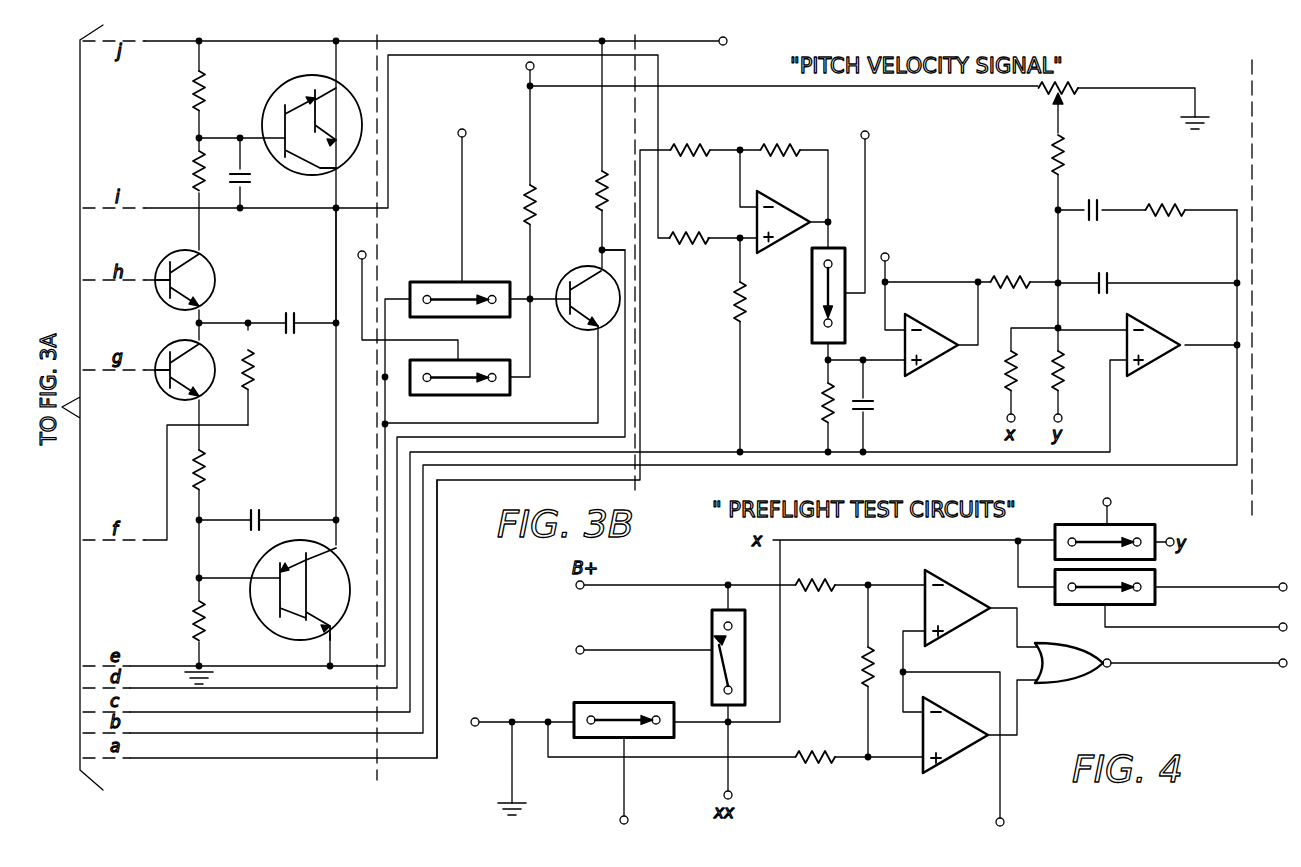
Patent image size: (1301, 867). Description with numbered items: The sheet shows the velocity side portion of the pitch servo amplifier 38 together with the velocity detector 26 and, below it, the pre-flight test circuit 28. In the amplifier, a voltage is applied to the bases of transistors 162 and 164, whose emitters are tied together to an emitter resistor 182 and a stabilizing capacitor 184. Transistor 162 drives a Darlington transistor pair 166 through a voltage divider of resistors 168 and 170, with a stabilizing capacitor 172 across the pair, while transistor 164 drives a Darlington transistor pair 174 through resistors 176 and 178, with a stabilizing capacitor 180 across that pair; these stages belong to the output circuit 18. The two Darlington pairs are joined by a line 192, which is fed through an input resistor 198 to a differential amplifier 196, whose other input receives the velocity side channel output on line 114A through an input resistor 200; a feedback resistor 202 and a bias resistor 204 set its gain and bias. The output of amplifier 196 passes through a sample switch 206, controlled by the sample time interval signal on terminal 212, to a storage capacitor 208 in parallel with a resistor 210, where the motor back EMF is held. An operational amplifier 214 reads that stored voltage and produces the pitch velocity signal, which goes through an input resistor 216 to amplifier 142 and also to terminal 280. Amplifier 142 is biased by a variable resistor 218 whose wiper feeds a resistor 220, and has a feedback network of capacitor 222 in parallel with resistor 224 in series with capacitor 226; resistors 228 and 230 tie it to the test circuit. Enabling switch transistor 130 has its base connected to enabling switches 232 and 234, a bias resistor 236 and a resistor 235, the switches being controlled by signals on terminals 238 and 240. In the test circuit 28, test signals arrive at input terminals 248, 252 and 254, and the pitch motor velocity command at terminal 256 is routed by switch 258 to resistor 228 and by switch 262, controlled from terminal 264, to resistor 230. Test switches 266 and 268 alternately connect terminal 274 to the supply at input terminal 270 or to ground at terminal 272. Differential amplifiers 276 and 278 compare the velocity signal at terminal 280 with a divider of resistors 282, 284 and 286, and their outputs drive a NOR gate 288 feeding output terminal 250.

In FIG. 3B, the resistor 170 is at (196, 90).
In FIG. 3B, the resistor 168 is at (196, 172).
In FIG. 3B, the stabilizing capacitor 172 is at (252, 180).
In FIG. 3B, the Darlington transistor pair 166 is at (298, 80).
In FIG. 3B, the amplifier circuit 18 is at (284, 238).
In FIG. 3B, the transistor 162 is at (170, 258).
In FIG. 3B, the transistor 164 is at (170, 346).
In FIG. 3B, the line 192 is at (336, 272).
In FIG. 3B, the stabilizing capacitor 184 is at (290, 318).
In FIG. 3B, the emitter resistor 182 is at (252, 378).
In FIG. 3B, the resistor 176 is at (203, 478).
In FIG. 3B, the stabilizing capacitor 180 is at (258, 510).
In FIG. 3B, the resistor 178 is at (194, 612).
In FIG. 3B, the Darlington transistor pair 174 is at (284, 627).
In FIG. 3B, the pitch servo amplifier 38 is at (215, 777).
In FIG. 3B, the input terminal 270 is at (526, 66).
In FIG. 4, the input terminal 270 is at (577, 589).
In FIG. 3B, the terminal 240 is at (464, 129).
In FIG. 3B, the bias resistor 236 is at (526, 206).
In FIG. 3B, the resistor 235 is at (598, 192).
In FIG. 3B, the terminal 238 is at (364, 250).
In FIG. 3B, the enabling switch 234 is at (446, 282).
In FIG. 3B, the enabling switch 232 is at (505, 335).
In FIG. 3B, the enabling switch transistor 130 is at (562, 282).
In FIG. 3B, the input resistor 200 is at (715, 112).
In FIG. 3B, the feedback resistor 202 is at (805, 112).
In FIG. 3B, the input resistor 198 is at (710, 208).
In FIG. 3B, the differential amplifier 196 is at (782, 212).
In FIG. 3B, the bias resistor 204 is at (736, 306).
In FIG. 3B, the sample switch 206 is at (812, 306).
In FIG. 3B, the resistor 210 is at (822, 410).
In FIG. 3B, the storage capacitor 208 is at (880, 403).
In FIG. 3B, the terminal 212 is at (866, 130).
In FIG. 3B, the velocity detector 26 is at (925, 182).
In FIG. 3B, the terminal 280 is at (886, 257).
In FIG. 4, the terminal 280 is at (995, 822).
In FIG. 3B, the input resistor 216 is at (1015, 276).
In FIG. 3B, the operational amplifier 214 is at (936, 340).
In FIG. 3B, the resistor 228 is at (1006, 366).
In FIG. 3B, the resistor 230 is at (1064, 370).
In FIG. 3B, the resistor 220 is at (1055, 155).
In FIG. 3B, the variable resistor 218 is at (1078, 92).
In FIG. 3B, the capacitor 226 is at (1118, 178).
In FIG. 3B, the resistor 224 is at (1173, 203).
In FIG. 3B, the capacitor 222 is at (1103, 274).
In FIG. 3B, the amplifier 142 is at (1165, 342).
In FIG. 3B, the line 114A is at (442, 540).
In FIG. 4, the input terminal 254 is at (577, 653).
In FIG. 4, the test switch 266 is at (712, 620).
In FIG. 4, the test switch 268 is at (582, 702).
In FIG. 4, the terminal 272 is at (475, 728).
In FIG. 4, the input terminal 252 is at (618, 820).
In FIG. 4, the terminal 274 is at (732, 797).
In FIG. 4, the resistor 282 is at (832, 590).
In FIG. 4, the resistor 284 is at (864, 667).
In FIG. 4, the resistor 286 is at (830, 753).
In FIG. 4, the differential amplifier 276 is at (958, 602).
In FIG. 4, the differential amplifier 278 is at (956, 730).
In FIG. 4, the NOR gate 288 is at (1075, 630).
In FIG. 4, the pre-flight test circuit 28 is at (1058, 691).
In FIG. 4, the terminal 264 is at (1112, 500).
In FIG. 4, the switch 262 is at (1145, 532).
In FIG. 4, the terminal 256 is at (1283, 582).
In FIG. 4, the switch 258 is at (1155, 577).
In FIG. 4, the input terminal 248 is at (1283, 622).
In FIG. 4, the output terminal 250 is at (1283, 658).